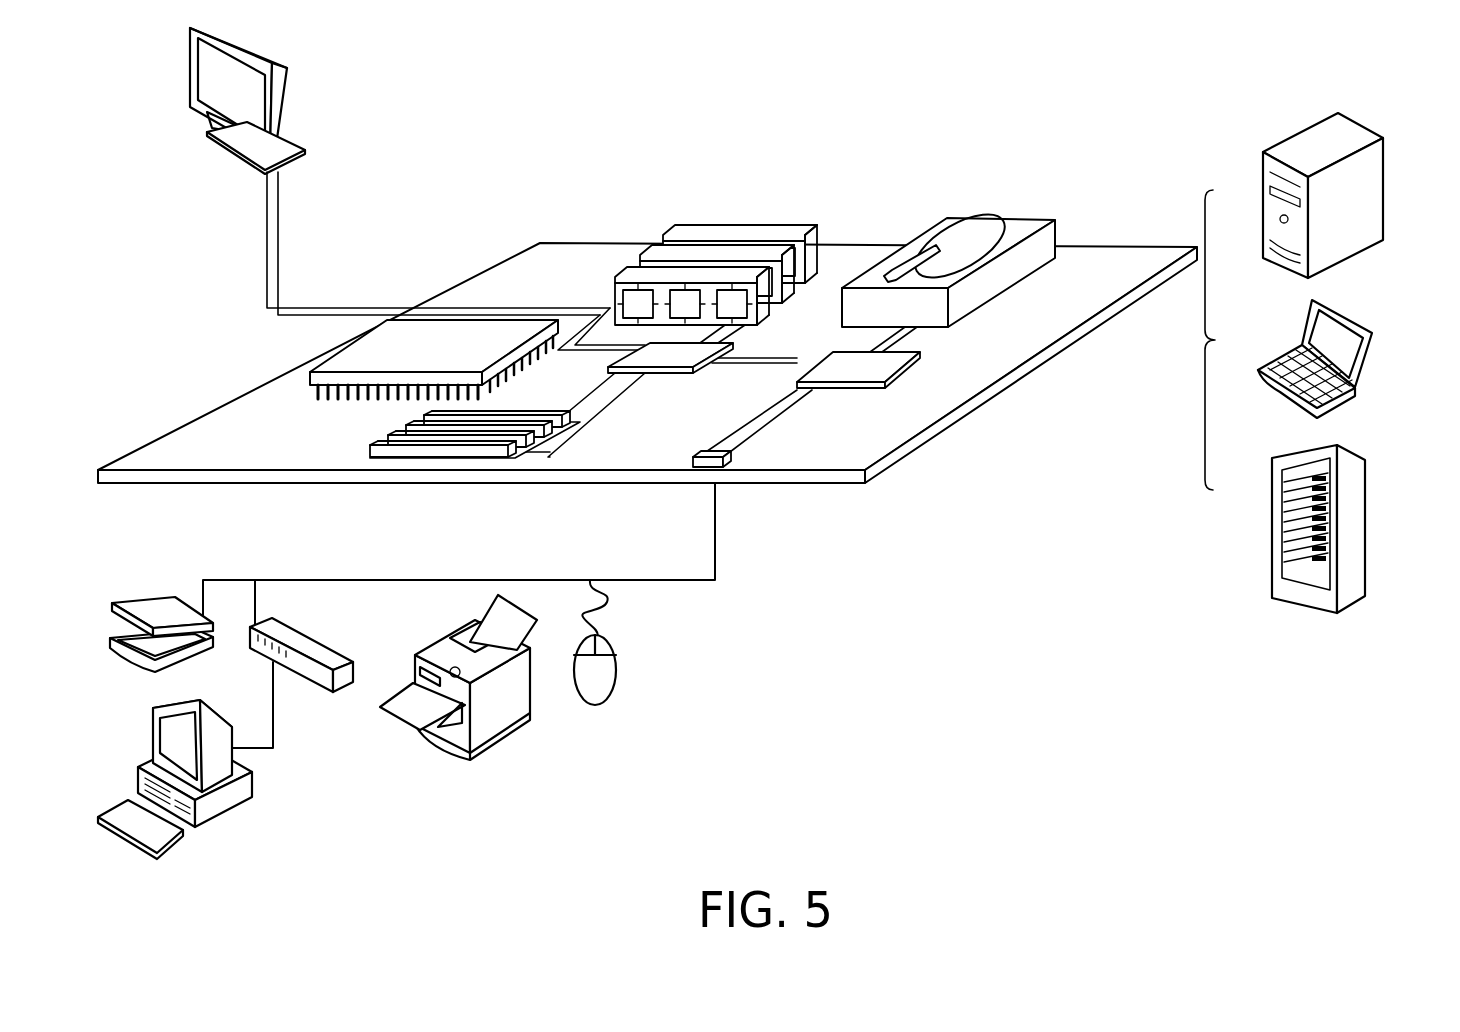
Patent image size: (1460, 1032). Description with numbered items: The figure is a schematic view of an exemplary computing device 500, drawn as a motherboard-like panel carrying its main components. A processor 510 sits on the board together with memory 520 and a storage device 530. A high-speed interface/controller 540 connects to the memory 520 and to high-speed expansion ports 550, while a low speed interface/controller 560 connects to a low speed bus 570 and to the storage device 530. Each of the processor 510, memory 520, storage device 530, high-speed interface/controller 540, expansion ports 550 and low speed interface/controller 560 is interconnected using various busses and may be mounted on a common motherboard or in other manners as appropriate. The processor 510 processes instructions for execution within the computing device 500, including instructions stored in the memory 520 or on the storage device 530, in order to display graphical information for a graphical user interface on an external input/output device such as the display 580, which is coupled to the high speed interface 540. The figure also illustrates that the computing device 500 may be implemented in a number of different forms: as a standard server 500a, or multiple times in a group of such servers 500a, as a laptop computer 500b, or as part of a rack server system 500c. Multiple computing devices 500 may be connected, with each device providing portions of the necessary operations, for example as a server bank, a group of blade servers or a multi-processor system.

The computing device 500 is at (1003, 60).
The standard server 500a is at (1290, 138).
The laptop computer 500b is at (1347, 318).
The rack server system 500c is at (1362, 515).
The processor 510 is at (310, 375).
The memory 520 is at (718, 240).
The storage device 530 is at (995, 218).
The high-speed interface/controller 540 is at (685, 373).
The high-speed expansion ports 550 is at (370, 450).
The low speed interface/controller 560 is at (848, 353).
The low speed bus 570 is at (728, 470).
The display 580 is at (190, 75).